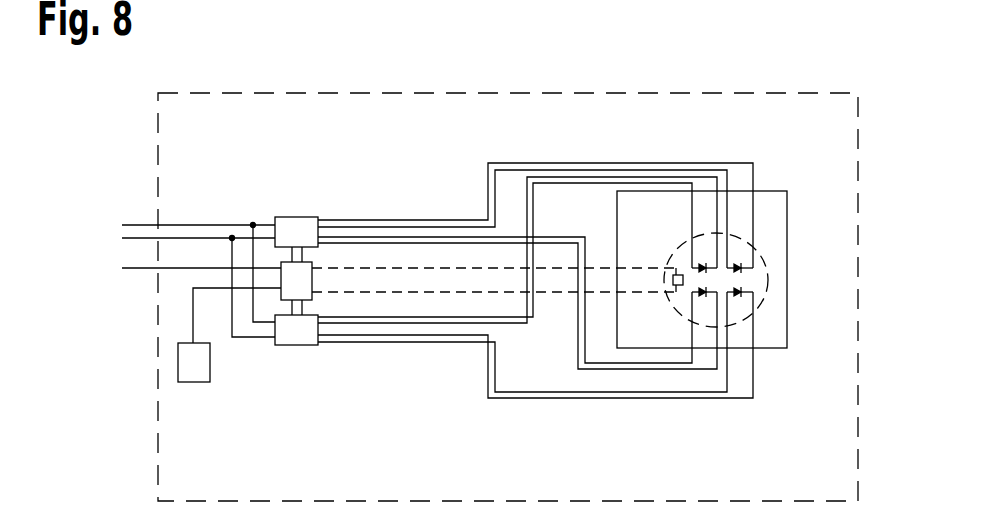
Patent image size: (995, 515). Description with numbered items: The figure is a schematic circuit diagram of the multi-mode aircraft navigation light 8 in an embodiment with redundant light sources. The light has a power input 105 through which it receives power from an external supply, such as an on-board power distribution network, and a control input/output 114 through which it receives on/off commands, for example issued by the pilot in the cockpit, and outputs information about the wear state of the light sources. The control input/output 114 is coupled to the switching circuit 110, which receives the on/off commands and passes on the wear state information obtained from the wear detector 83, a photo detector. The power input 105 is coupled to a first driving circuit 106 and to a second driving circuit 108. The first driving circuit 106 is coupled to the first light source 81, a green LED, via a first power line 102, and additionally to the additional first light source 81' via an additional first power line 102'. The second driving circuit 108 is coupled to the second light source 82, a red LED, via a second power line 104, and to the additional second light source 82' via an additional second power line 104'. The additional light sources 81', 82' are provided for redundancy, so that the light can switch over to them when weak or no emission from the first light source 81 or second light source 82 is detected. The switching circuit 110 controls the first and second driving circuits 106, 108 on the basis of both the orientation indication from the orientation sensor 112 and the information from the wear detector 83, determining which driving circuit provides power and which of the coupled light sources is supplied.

The multi-mode aircraft navigation light 8 is at (824, 60).
The first light source 81 is at (744, 380).
The additional first light source 81' is at (704, 191).
The second light source 82 is at (742, 191).
The additional second light source 82' is at (706, 380).
The wear detector 83 is at (686, 288).
The first power line 102 is at (535, 318).
The additional first power line 102' is at (535, 368).
The second power line 104 is at (517, 215).
The additional second power line 104' is at (517, 238).
The power input 105 is at (118, 223).
The first driving circuit 106 is at (296, 357).
The second driving circuit 108 is at (296, 205).
The switching circuit 110 is at (322, 272).
The orientation sensor 112 is at (193, 372).
The control input/output 114 is at (118, 266).